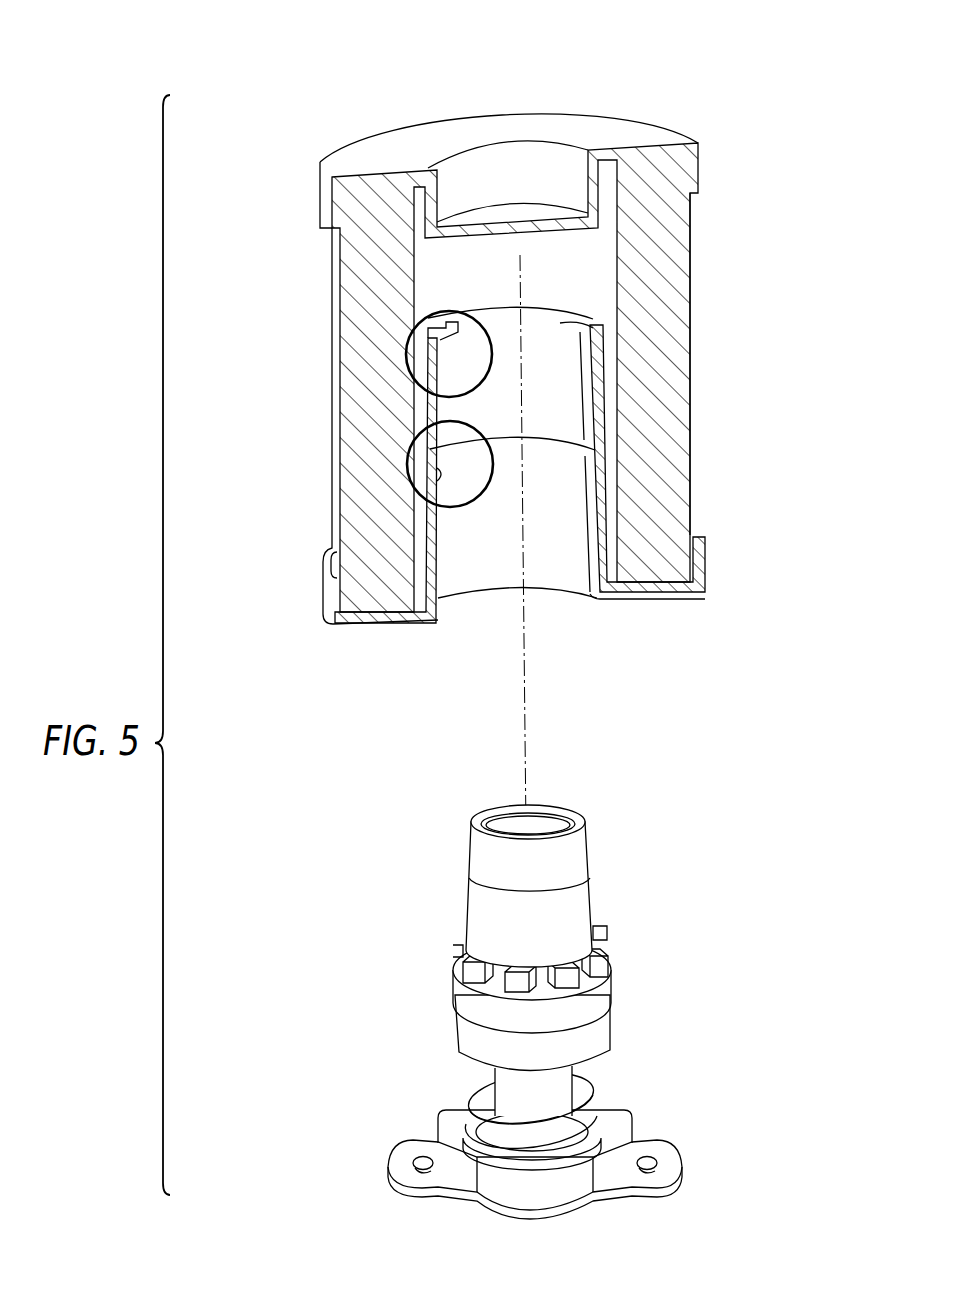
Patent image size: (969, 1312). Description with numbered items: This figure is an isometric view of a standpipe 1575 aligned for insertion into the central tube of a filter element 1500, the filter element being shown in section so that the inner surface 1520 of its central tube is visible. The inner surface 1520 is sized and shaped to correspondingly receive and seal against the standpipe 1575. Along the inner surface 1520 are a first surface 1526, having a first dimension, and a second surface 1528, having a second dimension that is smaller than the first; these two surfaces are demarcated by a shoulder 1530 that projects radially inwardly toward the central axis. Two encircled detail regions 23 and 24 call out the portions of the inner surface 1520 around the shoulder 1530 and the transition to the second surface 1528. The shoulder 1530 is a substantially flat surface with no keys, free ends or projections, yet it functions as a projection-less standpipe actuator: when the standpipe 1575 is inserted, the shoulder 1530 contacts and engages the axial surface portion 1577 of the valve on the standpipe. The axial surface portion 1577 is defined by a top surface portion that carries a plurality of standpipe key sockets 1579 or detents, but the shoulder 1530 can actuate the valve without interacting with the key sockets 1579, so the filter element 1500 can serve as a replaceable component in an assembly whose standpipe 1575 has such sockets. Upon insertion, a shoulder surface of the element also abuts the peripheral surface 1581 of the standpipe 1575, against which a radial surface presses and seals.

The filter element 1500 is at (736, 77).
The inner surface 1520 is at (490, 538).
The second surface 1528 is at (576, 385).
The first surface 1526 is at (577, 507).
The shoulder 1530 is at (430, 495).
The detail region 24 is at (407, 337).
The detail region 23 is at (407, 460).
The standpipe 1575 is at (690, 790).
The axial surface portion 1577 is at (588, 982).
The standpipe key sockets 1579 is at (603, 962).
The peripheral surface 1581 is at (576, 852).